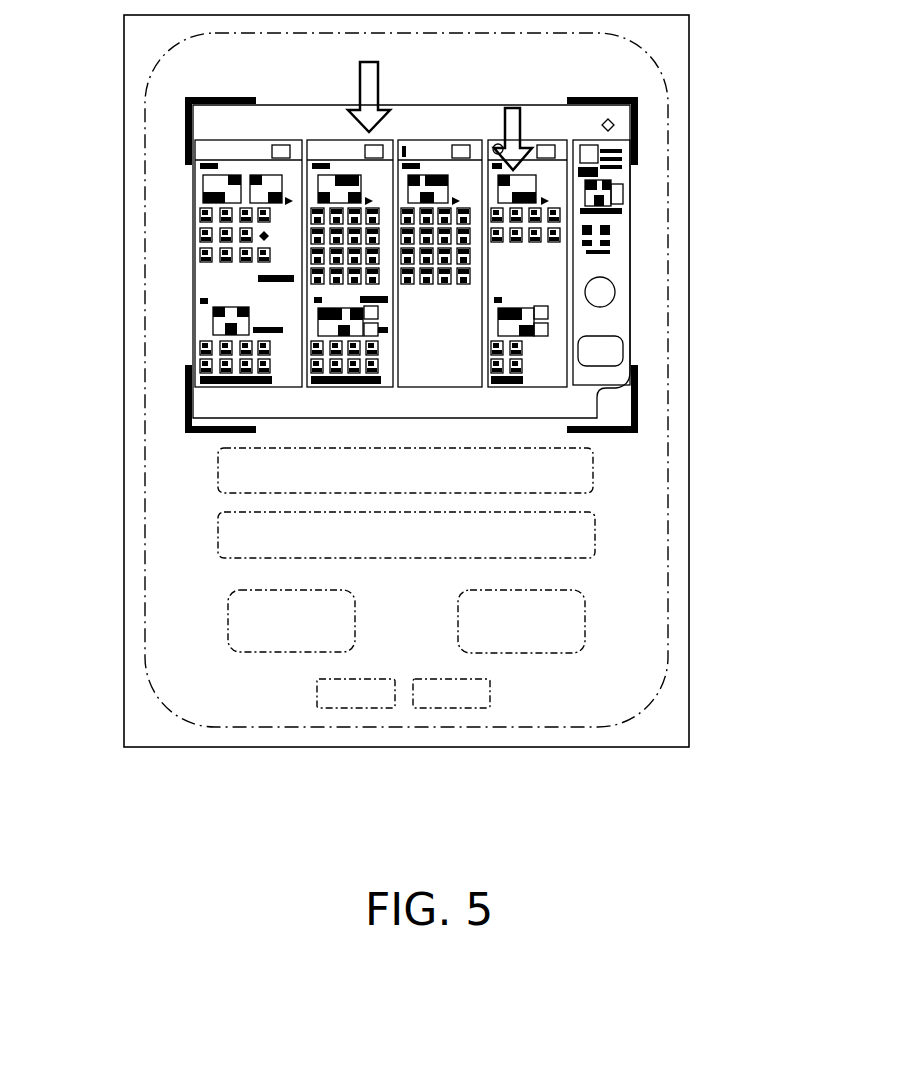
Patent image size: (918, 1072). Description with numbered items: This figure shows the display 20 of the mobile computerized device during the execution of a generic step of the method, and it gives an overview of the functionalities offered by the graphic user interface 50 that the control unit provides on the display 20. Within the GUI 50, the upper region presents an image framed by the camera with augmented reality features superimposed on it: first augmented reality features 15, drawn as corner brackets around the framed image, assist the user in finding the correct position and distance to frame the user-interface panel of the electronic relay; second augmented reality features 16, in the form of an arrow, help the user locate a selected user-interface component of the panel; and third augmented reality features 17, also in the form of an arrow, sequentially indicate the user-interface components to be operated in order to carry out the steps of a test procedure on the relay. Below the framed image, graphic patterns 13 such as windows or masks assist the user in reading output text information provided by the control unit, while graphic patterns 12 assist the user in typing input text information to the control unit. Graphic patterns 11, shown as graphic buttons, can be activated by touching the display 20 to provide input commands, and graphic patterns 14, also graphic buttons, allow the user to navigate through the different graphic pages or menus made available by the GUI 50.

The display 20 is at (112, 304).
The graphic user interface 50 is at (668, 193).
The first augmented reality features 15 is at (642, 385).
The second augmented reality features 16 is at (379, 94).
The third augmented reality features 17 is at (524, 140).
The graphic patterns for reading output text 13 is at (596, 470).
The graphic patterns for input text 12 is at (597, 546).
The graphic patterns for input commands 11 is at (587, 630).
The graphic patterns for navigation 14 is at (494, 696).